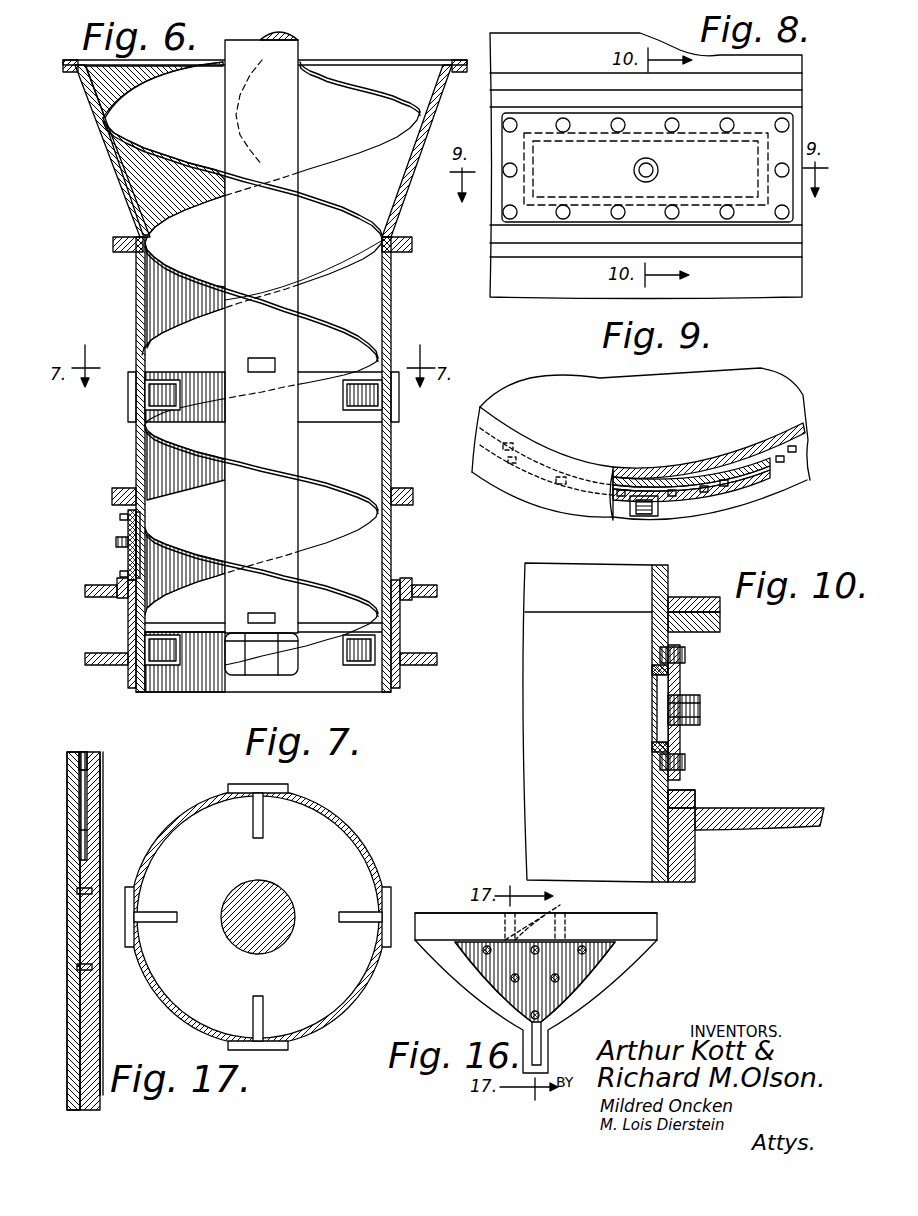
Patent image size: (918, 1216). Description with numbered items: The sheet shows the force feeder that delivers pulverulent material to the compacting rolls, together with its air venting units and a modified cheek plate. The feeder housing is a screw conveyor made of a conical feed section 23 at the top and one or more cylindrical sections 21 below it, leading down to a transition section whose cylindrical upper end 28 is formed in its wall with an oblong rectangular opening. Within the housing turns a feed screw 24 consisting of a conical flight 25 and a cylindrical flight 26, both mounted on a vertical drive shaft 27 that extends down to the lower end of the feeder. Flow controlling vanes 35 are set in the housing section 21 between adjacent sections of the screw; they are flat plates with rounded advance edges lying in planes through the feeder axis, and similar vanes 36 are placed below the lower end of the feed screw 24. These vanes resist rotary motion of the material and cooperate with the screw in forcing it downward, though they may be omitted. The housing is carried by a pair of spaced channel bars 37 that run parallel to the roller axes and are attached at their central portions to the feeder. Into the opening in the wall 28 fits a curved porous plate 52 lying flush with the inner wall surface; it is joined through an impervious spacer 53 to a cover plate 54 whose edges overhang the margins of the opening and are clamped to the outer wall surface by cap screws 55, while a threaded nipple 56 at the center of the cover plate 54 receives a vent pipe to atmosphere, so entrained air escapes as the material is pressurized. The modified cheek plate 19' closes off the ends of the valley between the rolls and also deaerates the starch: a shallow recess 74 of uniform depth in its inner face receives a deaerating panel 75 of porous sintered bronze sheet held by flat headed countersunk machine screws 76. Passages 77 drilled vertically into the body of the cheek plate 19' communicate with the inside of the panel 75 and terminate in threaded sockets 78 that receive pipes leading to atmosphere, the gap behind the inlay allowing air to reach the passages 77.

In FIG. 17, the modified cheek plate 19' is at (110, 931).
In FIG. 16, the modified cheek plate 19' is at (536, 993).
In FIG. 6, the cylindrical section 21 is at (136, 308).
In FIG. 7, the cylindrical section 21 is at (356, 848).
In FIG. 10, the cylindrical section 21 is at (650, 580).
In FIG. 6, the conical feed section 23 is at (118, 174).
In FIG. 6, the feed screw 24 is at (388, 272).
In FIG. 6, the conical flight 25 is at (345, 207).
In FIG. 6, the cylindrical flight 26 is at (212, 448).
In FIG. 6, the vertical drive shaft 27 is at (300, 62).
In FIG. 7, the vertical drive shaft 27 is at (285, 935).
In FIG. 6, the cylindrical upper end 28 is at (391, 554).
In FIG. 9, the cylindrical upper end 28 is at (795, 432).
In FIG. 10, the cylindrical upper end 28 is at (652, 626).
In FIG. 6, the flow controlling vanes 35 is at (160, 395).
In FIG. 7, the flow controlling vanes 35 is at (262, 825).
In FIG. 6, the vanes 36 is at (165, 668).
In FIG. 6, the channel bars 37 is at (100, 597).
In FIG. 8, the channel bars 37 is at (772, 285).
In FIG. 10, the channel bars 37 is at (762, 815).
In FIG. 6, the porous plate 52 is at (142, 546).
In FIG. 9, the porous plate 52 is at (640, 472).
In FIG. 10, the porous plate 52 is at (657, 704).
In FIG. 9, the spacer 53 is at (690, 482).
In FIG. 10, the spacer 53 is at (656, 670).
In FIG. 6, the cover plate 54 is at (126, 522).
In FIG. 8, the cover plate 54 is at (560, 180).
In FIG. 9, the cover plate 54 is at (745, 465).
In FIG. 10, the cover plate 54 is at (680, 742).
In FIG. 6, the cap screws 55 is at (120, 573).
In FIG. 8, the cap screws 55 is at (563, 118).
In FIG. 9, the cap screws 55 is at (560, 485).
In FIG. 10, the cap screws 55 is at (688, 656).
In FIG. 6, the threaded nipple 56 is at (116, 542).
In FIG. 8, the threaded nipple 56 is at (660, 170).
In FIG. 9, the threaded nipple 56 is at (642, 512).
In FIG. 10, the threaded nipple 56 is at (700, 706).
In FIG. 17, the shallow recess 74 is at (80, 1055).
In FIG. 16, the shallow recess 74 is at (590, 945).
In FIG. 17, the deaerating panel 75 is at (101, 992).
In FIG. 16, the deaerating panel 75 is at (546, 990).
In FIG. 17, the machine screws 76 is at (97, 888).
In FIG. 16, the machine screws 76 is at (585, 953).
In FIG. 17, the passages 77 is at (90, 795).
In FIG. 16, the passages 77 is at (535, 913).
In FIG. 17, the sockets 78 is at (78, 770).